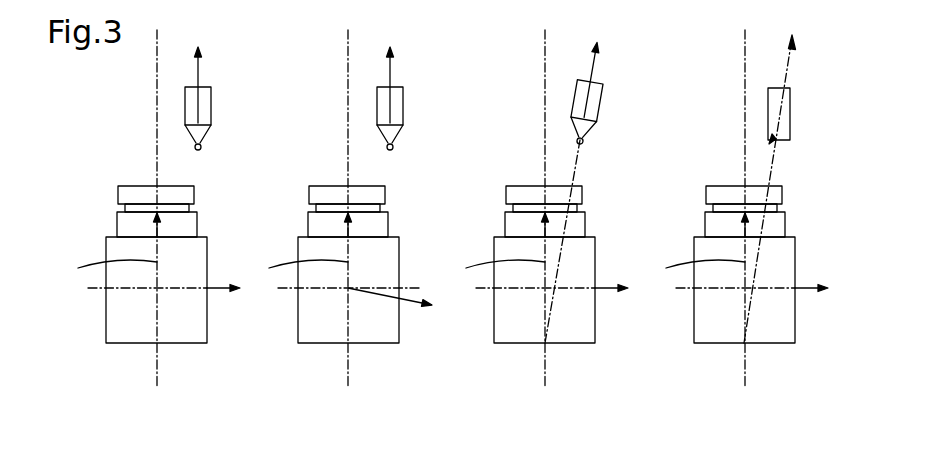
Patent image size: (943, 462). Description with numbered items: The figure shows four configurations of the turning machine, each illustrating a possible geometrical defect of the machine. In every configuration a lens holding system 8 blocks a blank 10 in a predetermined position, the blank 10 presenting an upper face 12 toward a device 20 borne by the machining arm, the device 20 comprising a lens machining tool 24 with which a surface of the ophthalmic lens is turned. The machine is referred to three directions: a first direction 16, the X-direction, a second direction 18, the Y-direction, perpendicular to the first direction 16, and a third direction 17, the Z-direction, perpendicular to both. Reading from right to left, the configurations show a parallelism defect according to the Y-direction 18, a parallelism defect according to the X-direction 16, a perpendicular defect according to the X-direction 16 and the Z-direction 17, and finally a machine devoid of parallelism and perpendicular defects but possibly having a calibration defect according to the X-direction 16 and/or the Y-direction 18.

The lens holding system 8 is at (106, 320).
The blank 10 is at (118, 193).
The upper face 12 is at (138, 186).
The first direction 16 is at (178, 290).
The third direction 17 is at (396, 270).
The second direction 18 is at (766, 290).
The device 20 is at (227, 95).
The lens machining tool 24 is at (202, 147).